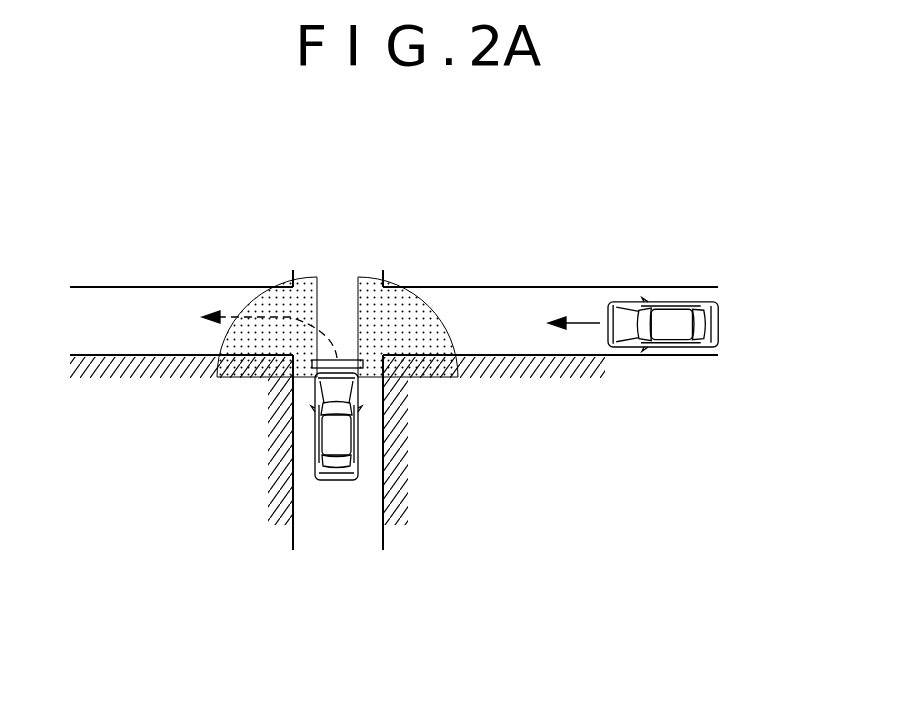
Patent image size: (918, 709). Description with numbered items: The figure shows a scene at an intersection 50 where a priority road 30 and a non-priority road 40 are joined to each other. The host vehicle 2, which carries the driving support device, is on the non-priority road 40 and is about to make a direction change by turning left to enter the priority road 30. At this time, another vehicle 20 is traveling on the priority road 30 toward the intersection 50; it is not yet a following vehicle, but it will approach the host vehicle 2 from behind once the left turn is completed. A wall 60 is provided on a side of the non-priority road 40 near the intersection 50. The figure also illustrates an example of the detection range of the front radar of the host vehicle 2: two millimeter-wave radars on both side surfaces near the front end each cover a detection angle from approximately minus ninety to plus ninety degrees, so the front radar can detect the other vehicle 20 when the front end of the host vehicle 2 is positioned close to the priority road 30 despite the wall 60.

The host vehicle 2 is at (337, 482).
The other vehicle 20 is at (665, 348).
The priority road 30 is at (503, 300).
The non-priority road 40 is at (370, 535).
The intersection 50 is at (308, 270).
The wall 60 is at (402, 442).